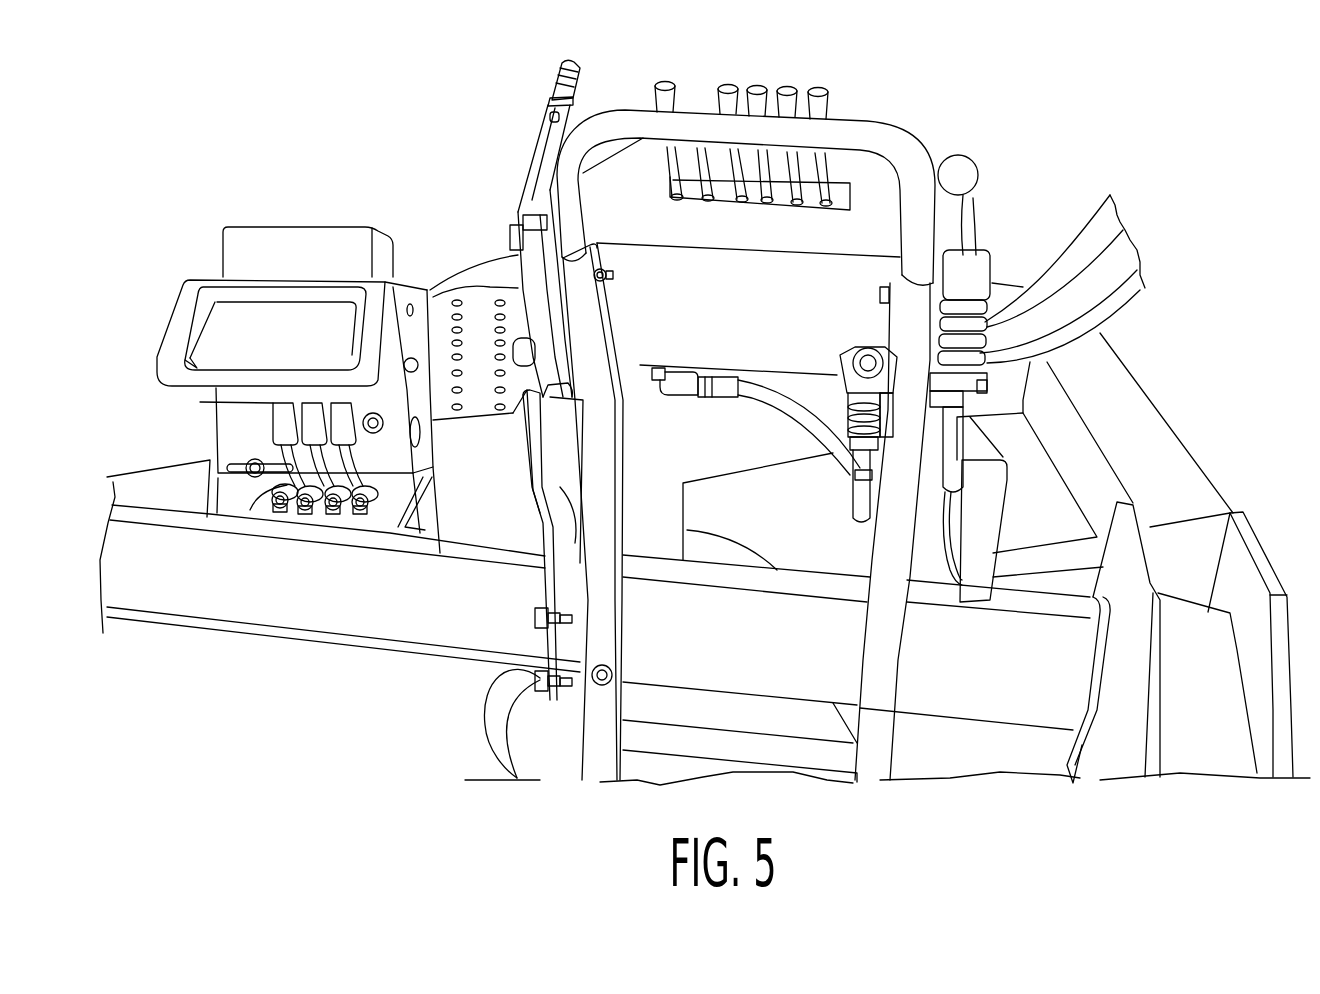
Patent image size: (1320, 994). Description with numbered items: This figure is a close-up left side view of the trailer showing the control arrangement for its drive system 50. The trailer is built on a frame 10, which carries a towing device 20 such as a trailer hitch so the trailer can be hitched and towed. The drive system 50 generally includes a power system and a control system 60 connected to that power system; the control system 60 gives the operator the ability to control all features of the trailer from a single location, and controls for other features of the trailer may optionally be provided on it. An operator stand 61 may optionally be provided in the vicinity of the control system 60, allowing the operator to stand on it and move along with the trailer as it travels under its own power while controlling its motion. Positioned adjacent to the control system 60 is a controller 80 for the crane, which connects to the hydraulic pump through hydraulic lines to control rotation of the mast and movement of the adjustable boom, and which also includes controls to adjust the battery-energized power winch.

The frame 10 is at (968, 702).
The towing device 20 is at (200, 612).
The drive system 50 is at (964, 378).
The control system 60 is at (893, 145).
The operator stand 61 is at (597, 712).
The controller 80 is at (297, 243).